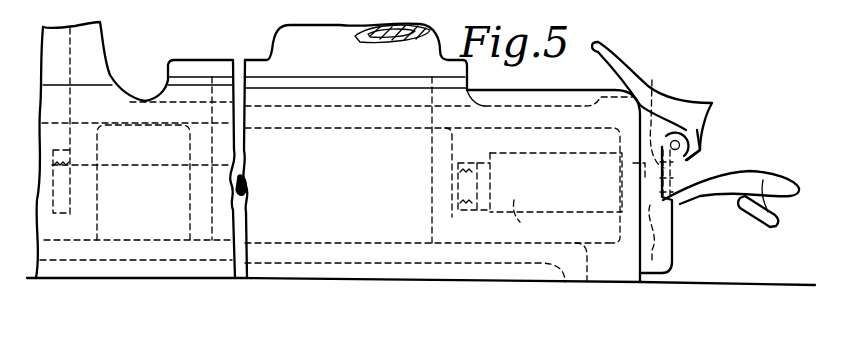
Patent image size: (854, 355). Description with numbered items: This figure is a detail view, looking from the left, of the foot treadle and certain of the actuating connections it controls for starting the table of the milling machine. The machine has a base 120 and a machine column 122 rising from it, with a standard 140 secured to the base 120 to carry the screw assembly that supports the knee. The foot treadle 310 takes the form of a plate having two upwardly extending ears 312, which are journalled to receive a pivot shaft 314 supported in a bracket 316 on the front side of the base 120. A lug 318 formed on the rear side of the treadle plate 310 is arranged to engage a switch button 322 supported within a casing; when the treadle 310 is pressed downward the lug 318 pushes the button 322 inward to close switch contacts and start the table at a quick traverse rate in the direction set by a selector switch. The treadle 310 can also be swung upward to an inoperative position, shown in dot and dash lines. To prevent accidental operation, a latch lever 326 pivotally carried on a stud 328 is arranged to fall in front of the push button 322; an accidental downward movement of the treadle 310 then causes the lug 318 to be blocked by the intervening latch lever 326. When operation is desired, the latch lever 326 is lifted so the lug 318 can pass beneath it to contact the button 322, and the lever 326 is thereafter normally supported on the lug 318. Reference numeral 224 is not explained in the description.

The base 120 is at (373, 277).
The machine column 122 is at (95, 40).
The standard 140 is at (272, 40).
The cavity 224 is at (533, 221).
The foot treadle 310 is at (618, 67).
The ears 312 is at (688, 166).
The pivot shaft 314 is at (679, 141).
The bracket 316 is at (668, 250).
The lug 318 is at (670, 215).
The switch button 322 is at (655, 190).
The latch lever 326 is at (653, 82).
The stud 328 is at (684, 196).